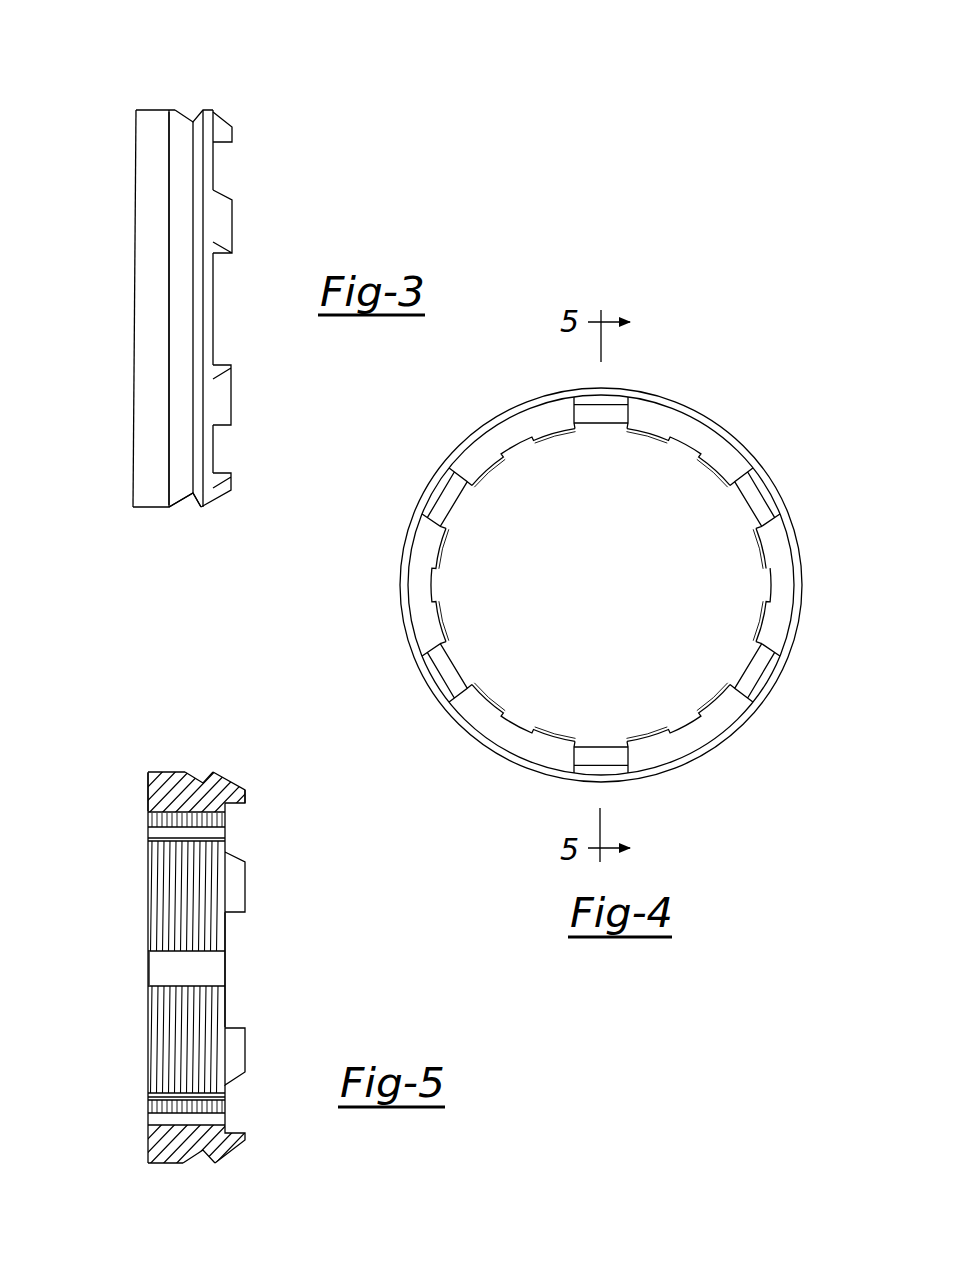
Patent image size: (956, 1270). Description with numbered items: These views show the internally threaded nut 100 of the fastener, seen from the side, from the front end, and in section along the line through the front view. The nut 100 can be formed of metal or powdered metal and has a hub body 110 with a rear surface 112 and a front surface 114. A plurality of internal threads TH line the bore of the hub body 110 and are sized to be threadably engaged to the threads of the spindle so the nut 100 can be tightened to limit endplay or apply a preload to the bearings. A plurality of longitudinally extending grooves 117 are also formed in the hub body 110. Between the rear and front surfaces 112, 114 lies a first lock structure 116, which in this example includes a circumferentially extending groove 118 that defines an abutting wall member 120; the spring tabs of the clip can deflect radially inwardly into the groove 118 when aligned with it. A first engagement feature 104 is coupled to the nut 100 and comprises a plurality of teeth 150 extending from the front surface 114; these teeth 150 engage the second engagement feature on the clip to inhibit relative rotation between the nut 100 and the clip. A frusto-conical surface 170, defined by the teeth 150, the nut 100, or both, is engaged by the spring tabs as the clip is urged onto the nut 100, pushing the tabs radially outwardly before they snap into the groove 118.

In FIG. 3, the internally threaded nut 100 is at (153, 128).
In FIG. 4, the internally threaded nut 100 is at (483, 745).
In FIG. 5, the internally threaded nut 100 is at (165, 1155).
In FIG. 3, the first engagement feature 104 is at (236, 184).
In FIG. 4, the first engagement feature 104 is at (436, 673).
In FIG. 5, the first engagement feature 104 is at (245, 896).
In FIG. 3, the hub body 110 is at (143, 433).
In FIG. 5, the hub body 110 is at (165, 776).
In FIG. 3, the rear surface 112 is at (135, 224).
In FIG. 5, the rear surface 112 is at (148, 800).
In FIG. 4, the front surface 114 is at (680, 425).
In FIG. 5, the front surface 114 is at (228, 932).
In FIG. 3, the first lock structure 116 is at (158, 537).
In FIG. 4, the longitudinally extending grooves 117 is at (503, 452).
In FIG. 5, the longitudinally extending grooves 117 is at (216, 975).
In FIG. 3, the circumferentially extending groove 118 is at (193, 118).
In FIG. 5, the circumferentially extending groove 118 is at (203, 1163).
In FIG. 3, the abutting wall member 120 is at (193, 508).
In FIG. 5, the abutting wall member 120 is at (203, 782).
In FIG. 3, the tooth 150 is at (234, 222).
In FIG. 4, the tooth 150 is at (608, 404).
In FIG. 5, the tooth 150 is at (245, 1052).
In FIG. 3, the frusto-conical surface 170 is at (234, 396).
In FIG. 5, the frusto-conical surface 170 is at (230, 786).
In FIG. 4, the internal threads TH is at (465, 658).
In FIG. 5, the internal threads TH is at (165, 932).